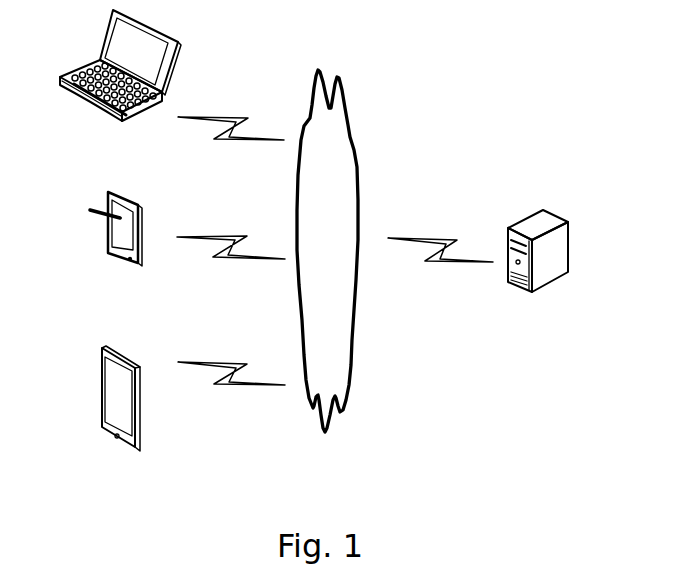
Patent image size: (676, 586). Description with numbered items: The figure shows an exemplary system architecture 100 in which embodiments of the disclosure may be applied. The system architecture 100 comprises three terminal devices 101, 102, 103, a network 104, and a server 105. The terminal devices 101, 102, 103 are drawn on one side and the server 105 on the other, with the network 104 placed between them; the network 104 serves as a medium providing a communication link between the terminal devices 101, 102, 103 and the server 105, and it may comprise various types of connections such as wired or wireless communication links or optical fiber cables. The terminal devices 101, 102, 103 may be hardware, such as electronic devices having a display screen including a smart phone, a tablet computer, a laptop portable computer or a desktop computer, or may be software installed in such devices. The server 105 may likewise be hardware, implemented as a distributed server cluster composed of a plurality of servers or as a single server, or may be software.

The system architecture 100 is at (528, 51).
The terminal device 101 is at (122, 417).
The terminal device 102 is at (116, 246).
The terminal device 103 is at (120, 82).
The network 104 is at (327, 251).
The server 105 is at (538, 271).